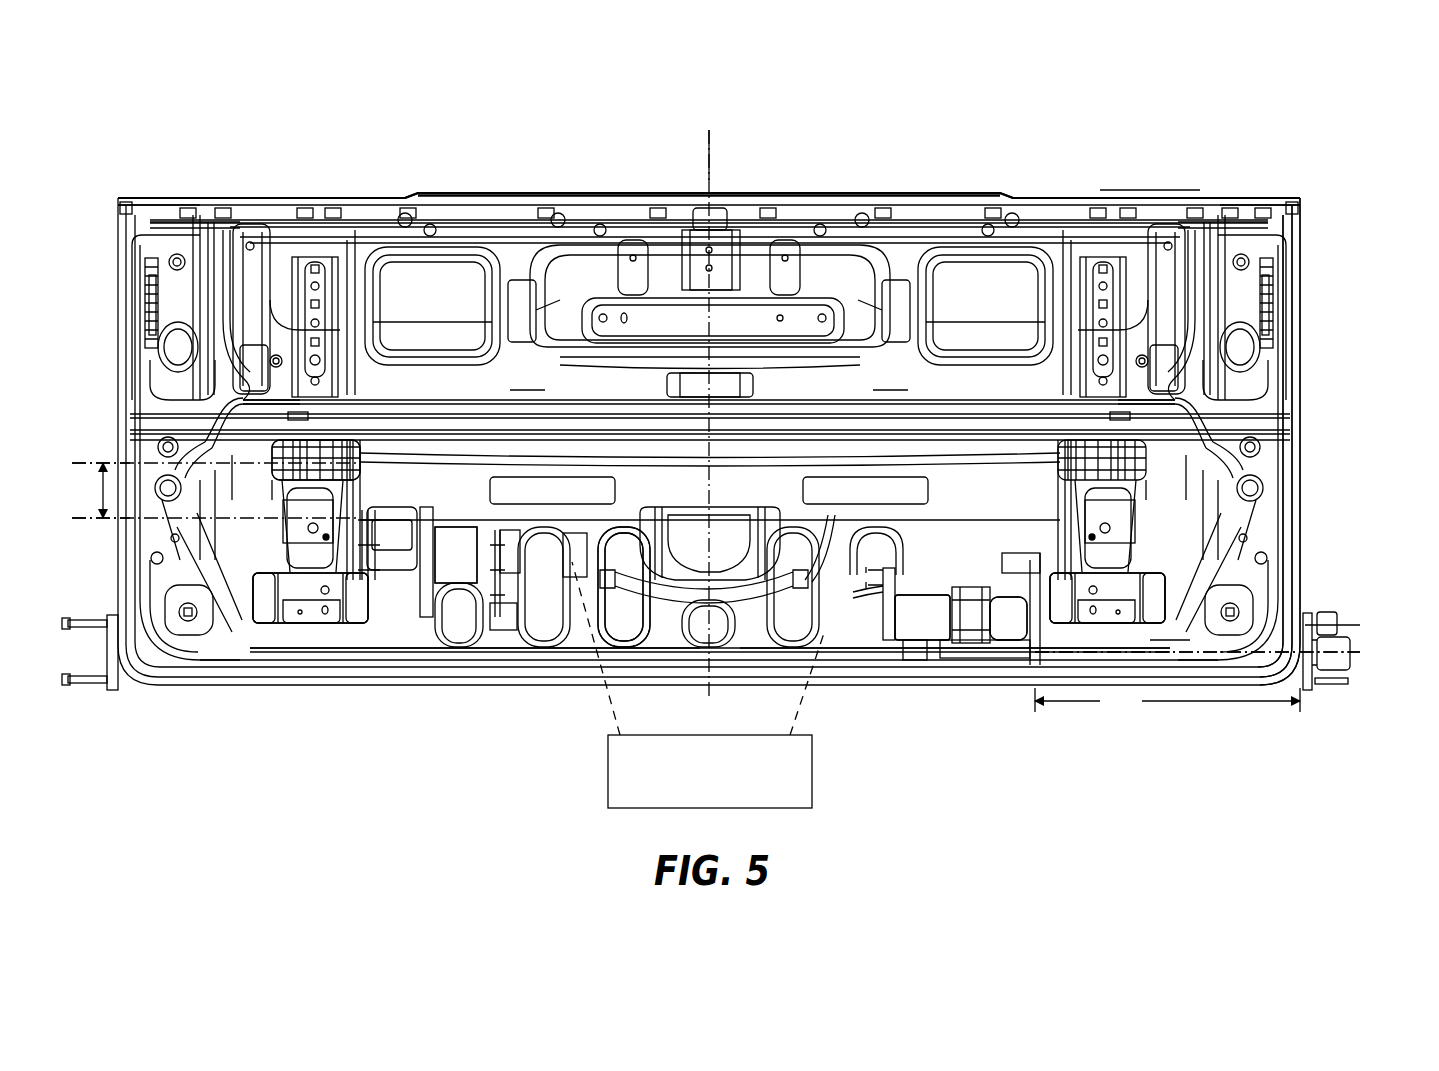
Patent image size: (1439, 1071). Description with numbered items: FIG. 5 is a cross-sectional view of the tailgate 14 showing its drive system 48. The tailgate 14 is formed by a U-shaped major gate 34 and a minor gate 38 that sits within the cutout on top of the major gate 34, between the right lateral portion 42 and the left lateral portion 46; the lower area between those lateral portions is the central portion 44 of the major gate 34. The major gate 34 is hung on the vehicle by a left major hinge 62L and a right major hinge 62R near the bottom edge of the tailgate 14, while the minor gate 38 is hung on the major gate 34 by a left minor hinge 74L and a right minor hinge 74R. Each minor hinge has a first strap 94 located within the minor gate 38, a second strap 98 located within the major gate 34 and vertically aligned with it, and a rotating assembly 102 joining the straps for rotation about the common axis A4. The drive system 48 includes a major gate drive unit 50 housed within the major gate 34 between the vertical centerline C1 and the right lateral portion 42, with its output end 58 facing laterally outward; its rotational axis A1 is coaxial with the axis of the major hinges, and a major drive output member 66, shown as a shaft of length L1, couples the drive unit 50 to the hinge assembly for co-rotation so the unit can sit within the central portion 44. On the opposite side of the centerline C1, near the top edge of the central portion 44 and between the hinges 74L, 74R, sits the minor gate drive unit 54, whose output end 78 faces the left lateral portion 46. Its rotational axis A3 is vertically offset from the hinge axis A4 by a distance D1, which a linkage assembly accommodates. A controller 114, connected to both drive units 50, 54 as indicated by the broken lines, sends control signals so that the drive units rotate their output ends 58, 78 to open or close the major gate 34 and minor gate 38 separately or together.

The tailgate 14 is at (1109, 160).
The minor gate 38 is at (573, 176).
The right lateral portion 42 is at (1250, 215).
The left lateral portion 46 is at (156, 215).
The first strap 94 is at (297, 277).
The rotating assembly 102 is at (320, 453).
The vertical centerline C1 is at (712, 178).
The left minor hinge 74L is at (264, 431).
The right minor hinge 74R is at (1140, 431).
The rotational axis of the minor hinge A4 is at (122, 461).
The rotational axis of the minor gate drive unit A3 is at (120, 520).
The offset distance D1 is at (85, 490).
The major drive output member 66 is at (1173, 647).
The right major hinge 62R is at (1338, 618).
The left major hinge 62L is at (103, 657).
The rotational axis of the major gate drive unit A1 is at (1375, 651).
The length of the major drive shaft L1 is at (1167, 701).
The second strap 98 is at (303, 615).
The output end of the minor gate drive unit 78 is at (333, 545).
The minor gate drive unit 54 is at (426, 597).
The major gate 34 is at (489, 690).
The central portion 44 is at (586, 629).
The controller 114 is at (728, 786).
The drive system 48 is at (842, 720).
The major gate drive unit 50 is at (931, 665).
The output end of the major gate drive unit 58 is at (1015, 645).